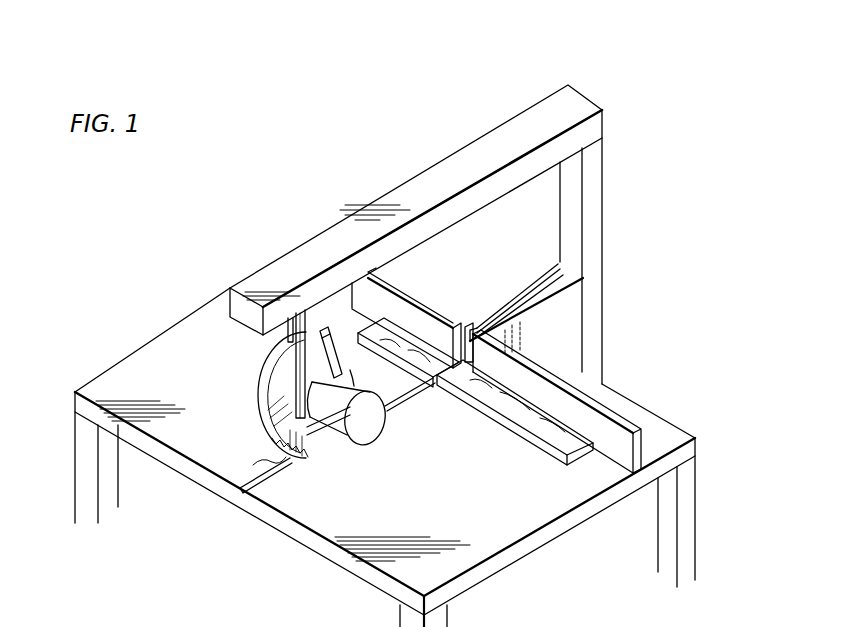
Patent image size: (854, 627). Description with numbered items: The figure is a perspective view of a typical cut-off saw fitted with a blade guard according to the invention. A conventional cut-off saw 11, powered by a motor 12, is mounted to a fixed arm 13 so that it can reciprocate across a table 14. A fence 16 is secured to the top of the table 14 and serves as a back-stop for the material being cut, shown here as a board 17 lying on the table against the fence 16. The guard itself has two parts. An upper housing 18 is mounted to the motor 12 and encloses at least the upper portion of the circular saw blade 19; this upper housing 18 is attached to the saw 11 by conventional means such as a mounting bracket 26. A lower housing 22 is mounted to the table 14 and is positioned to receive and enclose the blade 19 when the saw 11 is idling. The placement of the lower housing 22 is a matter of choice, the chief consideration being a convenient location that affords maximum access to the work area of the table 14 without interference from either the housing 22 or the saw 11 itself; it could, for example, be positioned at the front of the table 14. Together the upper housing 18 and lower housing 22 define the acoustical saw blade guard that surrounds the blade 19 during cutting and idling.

The cut-off saw 11 is at (268, 406).
The motor 12 is at (362, 444).
The fixed arm 13 is at (436, 173).
The table 14 is at (122, 394).
The fence 16 is at (596, 398).
The board 17 is at (540, 417).
The upper housing 18 is at (260, 418).
The circular saw blade 19 is at (244, 490).
The lower housing 22 is at (474, 318).
The mounting bracket 26 is at (336, 395).